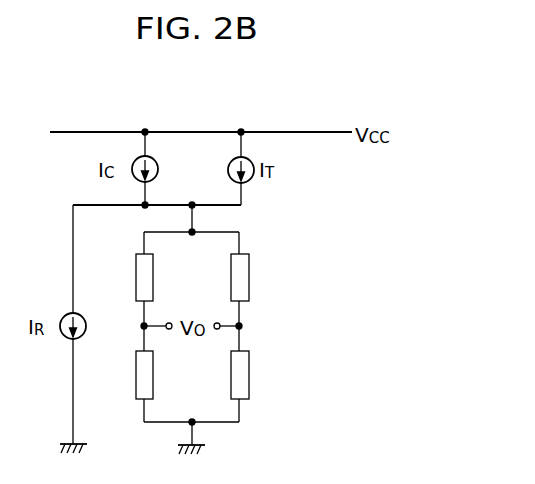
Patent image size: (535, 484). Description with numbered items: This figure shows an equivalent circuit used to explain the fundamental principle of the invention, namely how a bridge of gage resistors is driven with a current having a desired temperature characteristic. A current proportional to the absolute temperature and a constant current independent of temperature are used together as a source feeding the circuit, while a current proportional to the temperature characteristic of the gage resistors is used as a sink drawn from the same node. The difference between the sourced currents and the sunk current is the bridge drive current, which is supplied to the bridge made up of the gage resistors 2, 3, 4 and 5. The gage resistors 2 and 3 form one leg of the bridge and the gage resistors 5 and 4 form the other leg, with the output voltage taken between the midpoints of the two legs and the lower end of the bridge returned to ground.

The gage resistor 2 is at (153, 272).
The gage resistor 3 is at (153, 365).
The gage resistor 4 is at (231, 389).
The gage resistor 5 is at (231, 291).